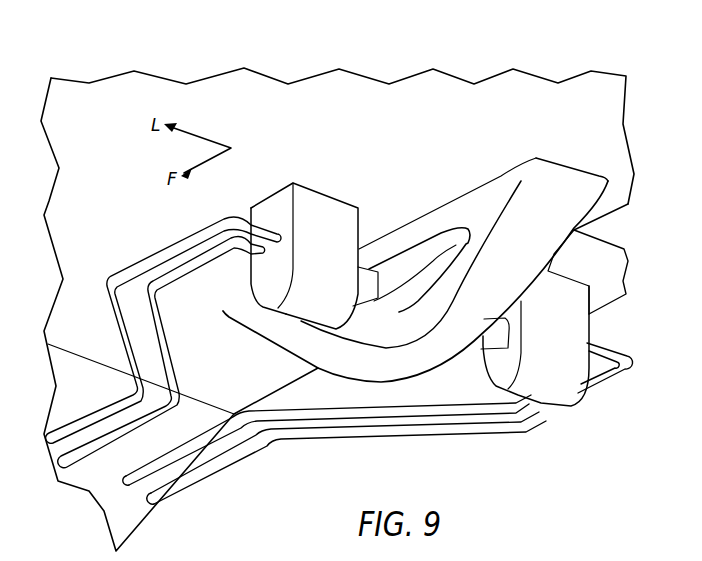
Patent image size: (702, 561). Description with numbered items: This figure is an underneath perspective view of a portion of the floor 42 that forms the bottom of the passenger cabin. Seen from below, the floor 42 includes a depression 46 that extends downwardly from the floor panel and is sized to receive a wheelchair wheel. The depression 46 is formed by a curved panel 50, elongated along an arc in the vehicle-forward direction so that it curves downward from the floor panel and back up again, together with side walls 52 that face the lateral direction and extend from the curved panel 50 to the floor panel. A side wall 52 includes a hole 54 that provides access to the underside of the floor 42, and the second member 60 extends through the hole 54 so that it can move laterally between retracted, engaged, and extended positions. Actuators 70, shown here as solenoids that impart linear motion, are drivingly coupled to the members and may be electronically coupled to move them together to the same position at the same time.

The floor 42 is at (450, 73).
The depression 46 is at (572, 236).
The curved panel 50 is at (540, 246).
The side wall 52 is at (494, 219).
The hole 54 is at (457, 225).
The second member 60 is at (428, 238).
The actuator 70 is at (276, 328).